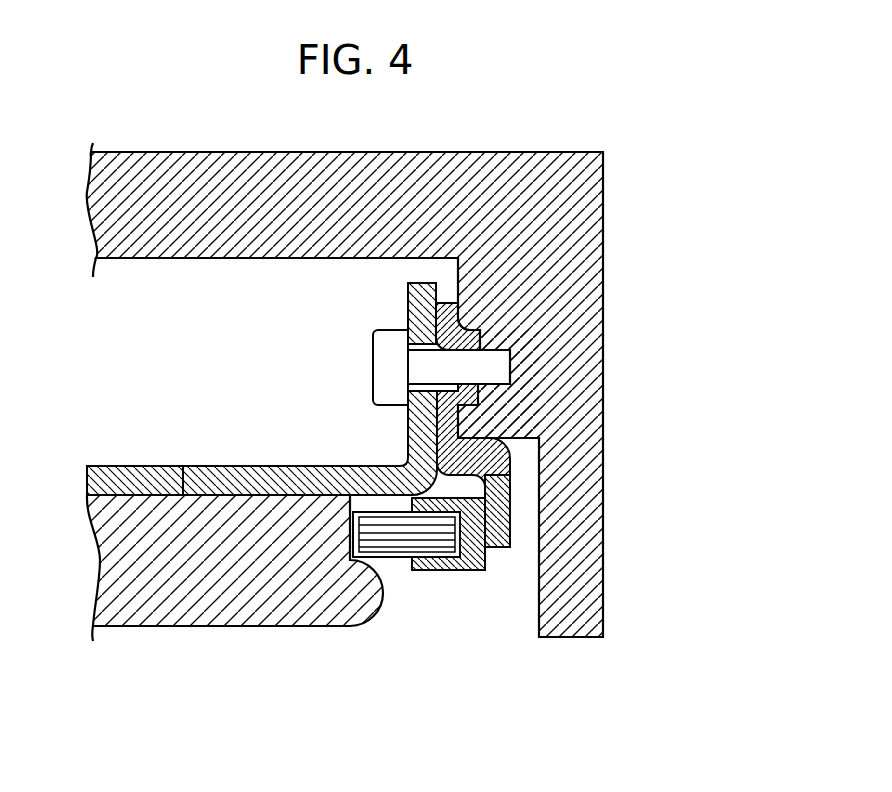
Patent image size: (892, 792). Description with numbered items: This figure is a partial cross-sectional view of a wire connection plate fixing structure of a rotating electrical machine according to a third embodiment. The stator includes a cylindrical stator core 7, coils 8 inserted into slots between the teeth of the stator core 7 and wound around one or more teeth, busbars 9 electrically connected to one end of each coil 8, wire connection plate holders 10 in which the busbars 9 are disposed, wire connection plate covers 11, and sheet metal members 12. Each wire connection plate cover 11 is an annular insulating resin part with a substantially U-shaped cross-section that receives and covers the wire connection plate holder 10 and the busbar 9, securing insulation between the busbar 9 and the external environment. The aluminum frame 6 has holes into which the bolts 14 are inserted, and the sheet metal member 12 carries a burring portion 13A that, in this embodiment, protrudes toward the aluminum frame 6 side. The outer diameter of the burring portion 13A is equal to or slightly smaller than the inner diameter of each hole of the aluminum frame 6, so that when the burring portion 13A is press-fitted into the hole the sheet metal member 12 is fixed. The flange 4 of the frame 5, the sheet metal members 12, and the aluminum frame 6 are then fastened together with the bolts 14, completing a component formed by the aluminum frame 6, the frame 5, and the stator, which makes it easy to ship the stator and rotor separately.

The flange 4 is at (408, 283).
The frame 5 is at (253, 466).
The aluminum frame 6 is at (603, 235).
The stator core 7 is at (177, 466).
The coil 8 is at (378, 605).
The busbar 9 is at (487, 539).
The wire connection plate holder 10 is at (393, 558).
The wire connection plate cover 11 is at (510, 518).
The sheet metal member 12 is at (540, 478).
The burring portion 13A is at (513, 327).
The bolt 14 is at (373, 355).